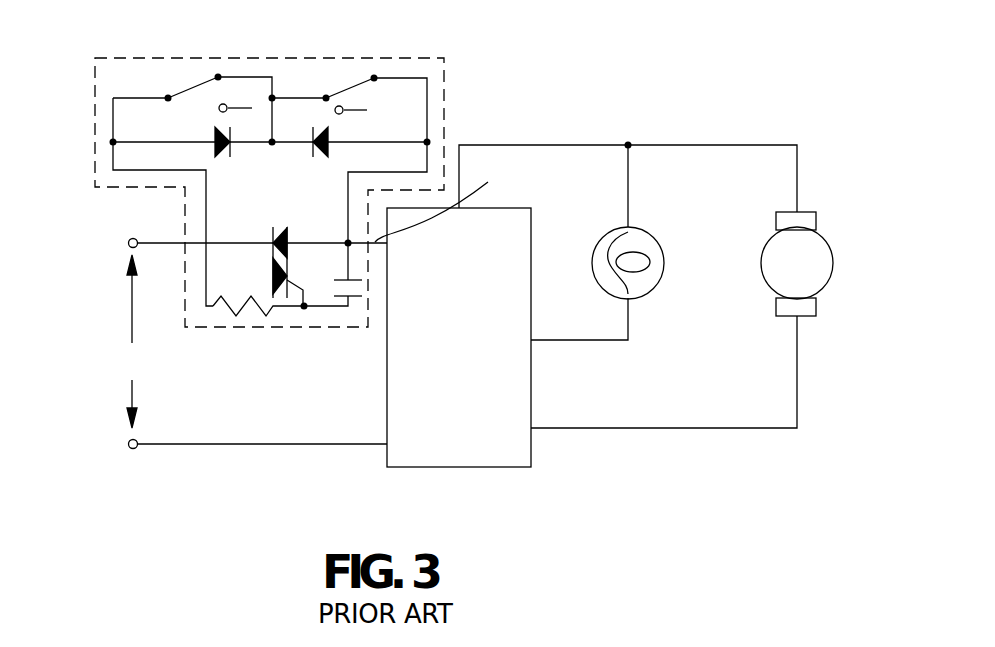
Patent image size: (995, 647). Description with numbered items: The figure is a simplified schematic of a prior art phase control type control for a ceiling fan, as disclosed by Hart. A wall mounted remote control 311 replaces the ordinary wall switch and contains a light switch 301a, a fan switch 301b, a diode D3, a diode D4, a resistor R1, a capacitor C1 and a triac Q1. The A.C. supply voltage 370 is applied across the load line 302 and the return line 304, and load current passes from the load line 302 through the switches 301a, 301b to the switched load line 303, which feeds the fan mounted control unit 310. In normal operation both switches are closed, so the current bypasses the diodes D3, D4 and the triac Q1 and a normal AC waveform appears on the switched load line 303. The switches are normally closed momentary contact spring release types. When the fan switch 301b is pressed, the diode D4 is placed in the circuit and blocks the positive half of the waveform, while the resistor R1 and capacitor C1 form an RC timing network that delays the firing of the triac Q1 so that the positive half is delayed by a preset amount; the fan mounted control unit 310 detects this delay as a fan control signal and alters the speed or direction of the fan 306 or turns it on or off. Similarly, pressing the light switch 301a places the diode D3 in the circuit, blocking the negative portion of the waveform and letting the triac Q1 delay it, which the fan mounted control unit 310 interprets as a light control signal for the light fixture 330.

The light switch 301a is at (205, 80).
The fan switch 301b is at (360, 80).
The wall mounted remote control 311 is at (444, 92).
The load line 302 is at (158, 240).
The second AC input terminal 304 is at (193, 447).
The A.C. supply voltage 370 is at (72, 350).
The switched load line 303 is at (455, 202).
The fan mounted control unit 310 is at (531, 445).
The light fixture 330 is at (655, 242).
The fan 306 is at (827, 247).
The diode D3 is at (240, 135).
The diode D4 is at (346, 135).
The triac Q1 is at (284, 248).
The resistor R1 is at (246, 318).
The capacitor C1 is at (352, 312).